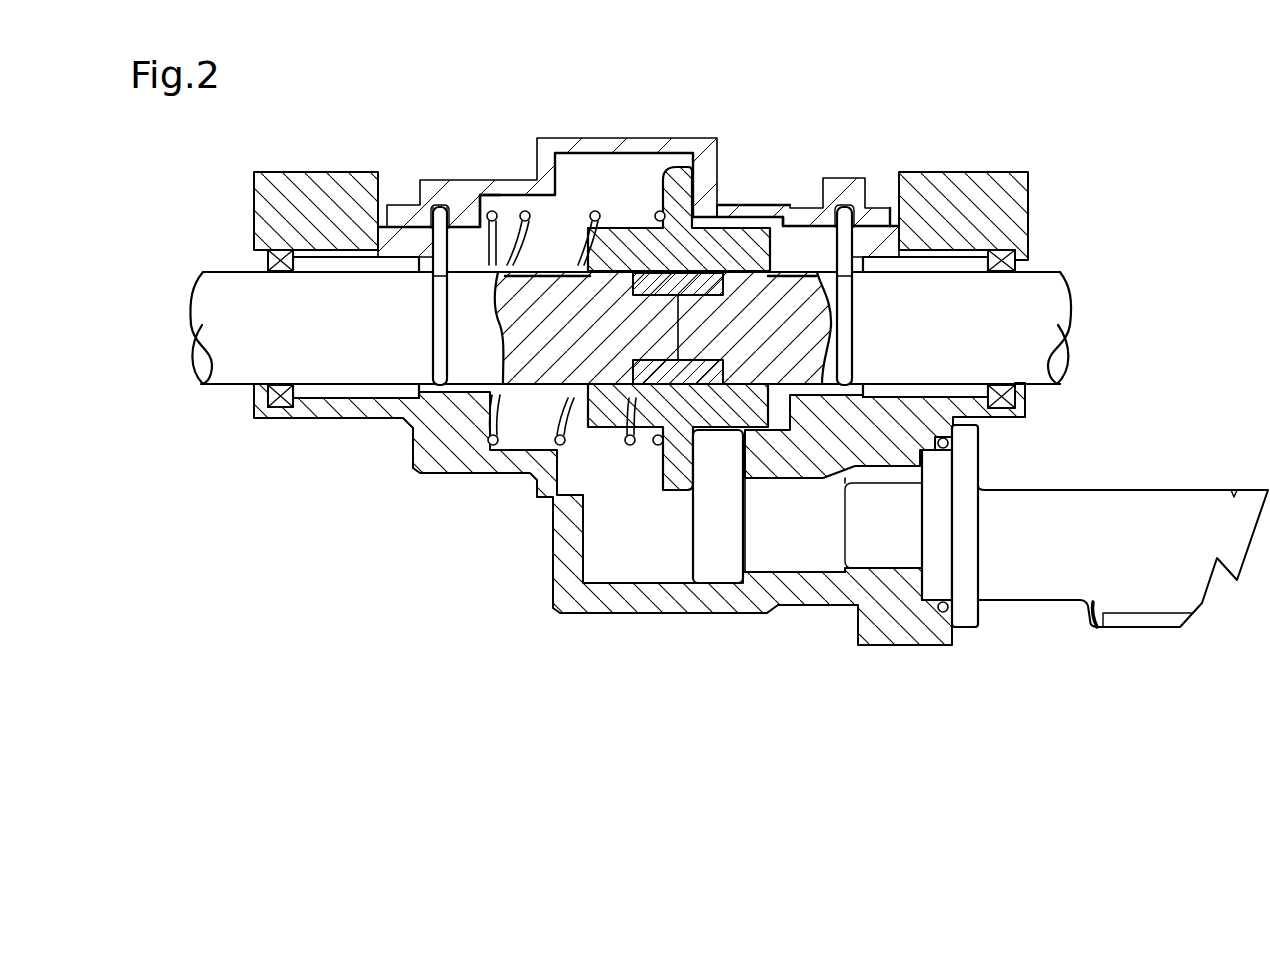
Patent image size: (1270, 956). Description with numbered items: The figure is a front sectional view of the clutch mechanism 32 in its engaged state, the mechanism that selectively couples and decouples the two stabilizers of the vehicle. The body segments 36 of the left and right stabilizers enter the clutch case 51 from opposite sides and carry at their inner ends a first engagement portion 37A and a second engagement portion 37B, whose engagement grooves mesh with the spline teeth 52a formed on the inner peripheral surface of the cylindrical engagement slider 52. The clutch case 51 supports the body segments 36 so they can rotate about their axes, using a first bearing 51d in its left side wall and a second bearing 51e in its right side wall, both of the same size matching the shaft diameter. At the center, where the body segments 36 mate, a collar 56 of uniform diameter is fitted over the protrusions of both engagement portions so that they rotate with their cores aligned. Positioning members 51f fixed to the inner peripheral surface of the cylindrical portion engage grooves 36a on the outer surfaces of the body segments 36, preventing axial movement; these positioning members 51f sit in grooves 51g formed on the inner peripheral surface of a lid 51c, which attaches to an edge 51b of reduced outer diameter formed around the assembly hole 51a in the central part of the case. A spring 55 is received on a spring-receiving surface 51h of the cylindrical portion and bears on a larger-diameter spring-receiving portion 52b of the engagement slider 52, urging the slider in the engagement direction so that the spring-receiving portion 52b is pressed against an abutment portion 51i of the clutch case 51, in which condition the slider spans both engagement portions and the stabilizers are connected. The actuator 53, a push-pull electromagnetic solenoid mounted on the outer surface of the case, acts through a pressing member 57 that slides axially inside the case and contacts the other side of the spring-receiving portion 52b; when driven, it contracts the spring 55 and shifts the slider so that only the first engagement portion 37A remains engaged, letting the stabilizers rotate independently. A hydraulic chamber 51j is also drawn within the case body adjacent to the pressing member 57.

The clutch mechanism 32 is at (638, 151).
The body segment 36 is at (365, 355).
The groove 36a is at (437, 300).
The first engagement portion 37A is at (573, 262).
The second engagement portion 37B is at (773, 257).
The clutch case 51 is at (462, 462).
The assembly hole 51a is at (838, 244).
The edge 51b is at (892, 212).
The lid 51c is at (485, 200).
The first bearing 51d is at (291, 248).
The second bearing 51e is at (1003, 248).
The positioning member 51f is at (447, 220).
The groove 51g is at (447, 205).
The spring-receiving surface 51h is at (487, 210).
The abutment portion 51i is at (575, 266).
The hydraulic chamber 51j is at (805, 556).
The engagement slider 52 is at (600, 418).
The spline teeth 52a is at (618, 228).
The spring-receiving portion 52b is at (683, 487).
The actuator 53 is at (1030, 582).
The spring 55 is at (565, 420).
The collar 56 is at (662, 370).
The pressing member 57 is at (727, 557).